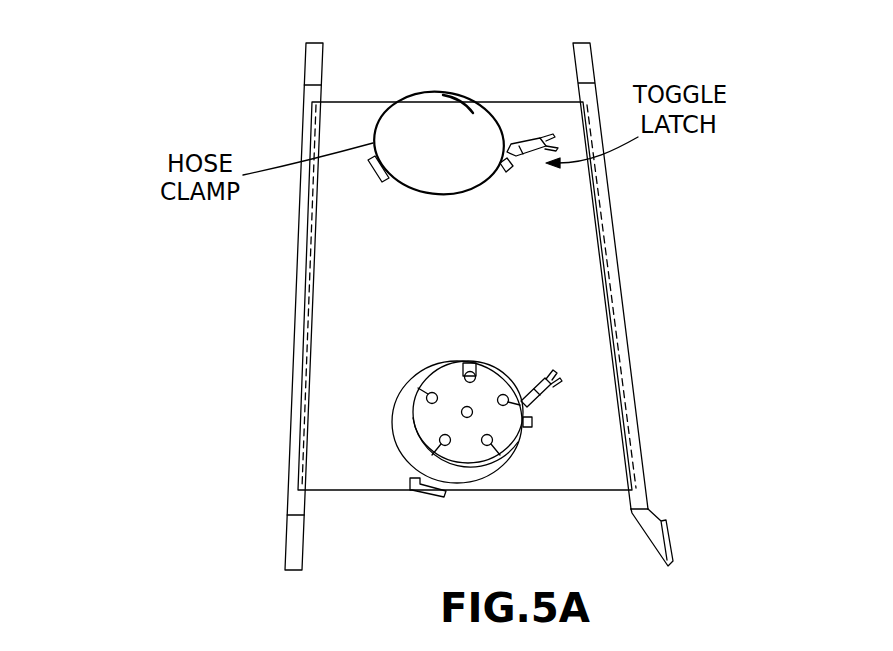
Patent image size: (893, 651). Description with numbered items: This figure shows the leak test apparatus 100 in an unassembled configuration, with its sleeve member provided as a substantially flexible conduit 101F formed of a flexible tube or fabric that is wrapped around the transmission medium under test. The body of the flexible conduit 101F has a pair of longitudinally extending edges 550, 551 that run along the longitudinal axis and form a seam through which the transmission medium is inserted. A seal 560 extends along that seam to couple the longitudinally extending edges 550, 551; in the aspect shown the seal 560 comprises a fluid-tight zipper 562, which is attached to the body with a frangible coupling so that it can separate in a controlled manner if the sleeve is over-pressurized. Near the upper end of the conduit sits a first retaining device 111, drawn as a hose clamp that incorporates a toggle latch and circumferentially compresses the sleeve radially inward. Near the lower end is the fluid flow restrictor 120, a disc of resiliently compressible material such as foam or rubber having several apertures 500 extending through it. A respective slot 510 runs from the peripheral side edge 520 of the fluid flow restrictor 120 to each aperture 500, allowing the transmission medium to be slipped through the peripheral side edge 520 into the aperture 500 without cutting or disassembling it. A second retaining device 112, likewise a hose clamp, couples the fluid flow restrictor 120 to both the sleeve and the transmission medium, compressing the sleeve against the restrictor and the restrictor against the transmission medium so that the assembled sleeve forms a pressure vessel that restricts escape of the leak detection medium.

The leak test apparatus 100 is at (153, 92).
The first retaining device 111 is at (453, 97).
The substantially flexible conduit 101F is at (573, 187).
The apertures 500 is at (466, 365).
The fluid flow restrictor 120 is at (493, 380).
The longitudinally extending edge 550 is at (652, 409).
The longitudinally extending edge 551 is at (255, 344).
The slot 510 is at (430, 455).
The peripheral side edge 520 is at (478, 468).
The second retaining device 112 is at (425, 497).
The seal 560 is at (655, 502).
The fluid-tight zipper 562 is at (650, 516).